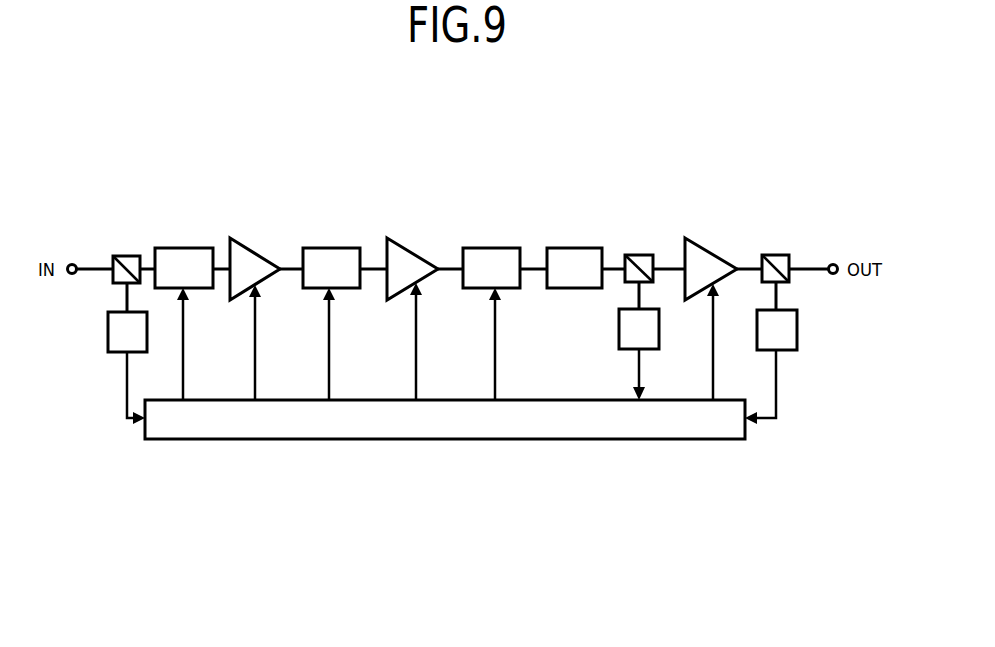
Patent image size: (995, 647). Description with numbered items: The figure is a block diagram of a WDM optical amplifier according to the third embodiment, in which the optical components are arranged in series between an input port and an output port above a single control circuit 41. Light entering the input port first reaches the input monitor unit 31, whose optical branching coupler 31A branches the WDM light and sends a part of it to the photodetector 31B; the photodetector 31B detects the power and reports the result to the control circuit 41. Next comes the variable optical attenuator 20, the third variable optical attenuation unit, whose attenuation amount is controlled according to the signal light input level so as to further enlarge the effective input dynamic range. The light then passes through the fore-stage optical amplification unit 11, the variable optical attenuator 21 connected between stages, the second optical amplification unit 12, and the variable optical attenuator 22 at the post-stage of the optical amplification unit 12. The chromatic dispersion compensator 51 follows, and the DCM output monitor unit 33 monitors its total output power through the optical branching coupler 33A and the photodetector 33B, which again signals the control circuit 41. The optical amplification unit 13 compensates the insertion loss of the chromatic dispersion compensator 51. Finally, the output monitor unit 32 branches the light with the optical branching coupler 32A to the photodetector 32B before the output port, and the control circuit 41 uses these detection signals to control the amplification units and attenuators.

The input monitor unit 31 is at (134, 192).
The optical branching coupler 31A is at (128, 257).
The photodetector 31B is at (112, 355).
The variable optical attenuator 20 is at (182, 247).
The optical amplification unit 11 is at (252, 245).
The variable optical attenuator 21 is at (330, 248).
The optical amplification unit 12 is at (412, 240).
The variable optical attenuator 22 is at (497, 248).
The chromatic dispersion compensator 51 is at (575, 248).
The DCM output monitor unit 33 is at (629, 192).
The optical branching coupler 33A is at (638, 255).
The photodetector 33B is at (653, 352).
The optical amplification unit 13 is at (707, 245).
The output monitor unit 32 is at (770, 192).
The optical branching coupler 32A is at (777, 255).
The photodetector 32B is at (790, 353).
The control circuit 41 is at (455, 440).